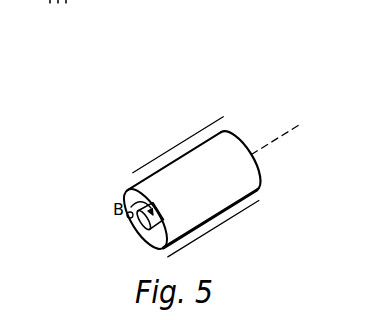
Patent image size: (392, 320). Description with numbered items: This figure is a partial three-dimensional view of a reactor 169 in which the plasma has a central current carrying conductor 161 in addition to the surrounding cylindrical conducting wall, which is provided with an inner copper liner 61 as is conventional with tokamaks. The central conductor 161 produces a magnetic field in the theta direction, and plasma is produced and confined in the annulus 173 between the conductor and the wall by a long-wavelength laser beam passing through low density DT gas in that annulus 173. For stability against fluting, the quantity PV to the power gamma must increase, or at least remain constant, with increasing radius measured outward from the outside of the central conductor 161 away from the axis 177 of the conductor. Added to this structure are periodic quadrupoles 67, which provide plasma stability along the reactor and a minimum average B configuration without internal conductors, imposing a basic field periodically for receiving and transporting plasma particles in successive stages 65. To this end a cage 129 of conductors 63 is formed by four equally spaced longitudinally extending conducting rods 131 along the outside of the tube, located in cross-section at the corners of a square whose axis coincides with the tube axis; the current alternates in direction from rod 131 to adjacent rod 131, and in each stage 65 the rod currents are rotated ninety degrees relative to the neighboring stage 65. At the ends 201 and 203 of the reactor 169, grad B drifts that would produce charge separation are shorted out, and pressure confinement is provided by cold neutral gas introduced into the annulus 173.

The inner copper liner 61 is at (258, 173).
The longitudinally extending conductors 63 is at (183, 139).
The stage 65 is at (245, 220).
The periodic quadrupoles 67 is at (267, 210).
The cage of conductors 129 is at (160, 100).
The longitudinally extending conducting rods 131 is at (197, 239).
The central current carrying conductor 161 is at (138, 218).
The reactor 169 is at (229, 148).
The annulus 173 is at (125, 192).
The axis of the conductor 177 is at (302, 127).
The end of reactor 201 is at (260, 112).
The end of reactor 203 is at (102, 205).